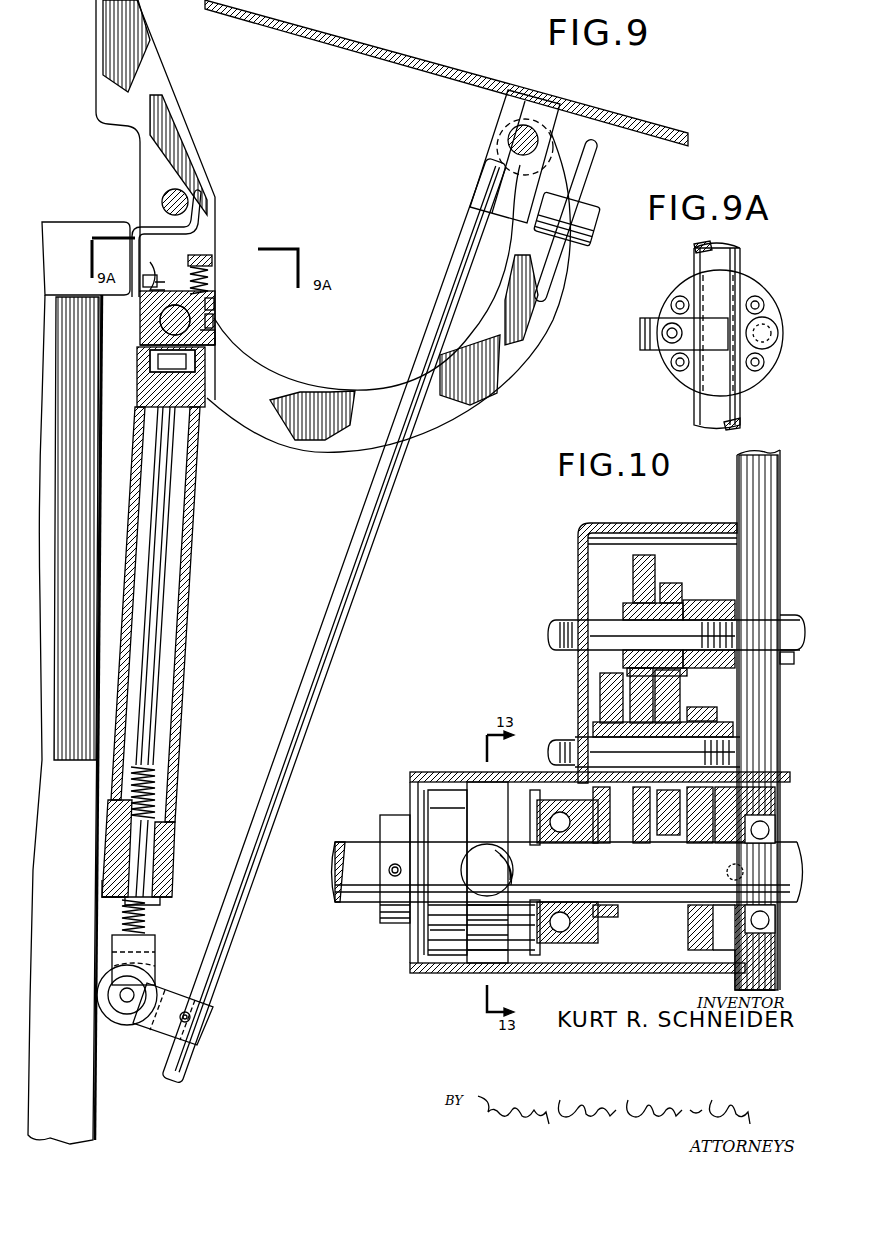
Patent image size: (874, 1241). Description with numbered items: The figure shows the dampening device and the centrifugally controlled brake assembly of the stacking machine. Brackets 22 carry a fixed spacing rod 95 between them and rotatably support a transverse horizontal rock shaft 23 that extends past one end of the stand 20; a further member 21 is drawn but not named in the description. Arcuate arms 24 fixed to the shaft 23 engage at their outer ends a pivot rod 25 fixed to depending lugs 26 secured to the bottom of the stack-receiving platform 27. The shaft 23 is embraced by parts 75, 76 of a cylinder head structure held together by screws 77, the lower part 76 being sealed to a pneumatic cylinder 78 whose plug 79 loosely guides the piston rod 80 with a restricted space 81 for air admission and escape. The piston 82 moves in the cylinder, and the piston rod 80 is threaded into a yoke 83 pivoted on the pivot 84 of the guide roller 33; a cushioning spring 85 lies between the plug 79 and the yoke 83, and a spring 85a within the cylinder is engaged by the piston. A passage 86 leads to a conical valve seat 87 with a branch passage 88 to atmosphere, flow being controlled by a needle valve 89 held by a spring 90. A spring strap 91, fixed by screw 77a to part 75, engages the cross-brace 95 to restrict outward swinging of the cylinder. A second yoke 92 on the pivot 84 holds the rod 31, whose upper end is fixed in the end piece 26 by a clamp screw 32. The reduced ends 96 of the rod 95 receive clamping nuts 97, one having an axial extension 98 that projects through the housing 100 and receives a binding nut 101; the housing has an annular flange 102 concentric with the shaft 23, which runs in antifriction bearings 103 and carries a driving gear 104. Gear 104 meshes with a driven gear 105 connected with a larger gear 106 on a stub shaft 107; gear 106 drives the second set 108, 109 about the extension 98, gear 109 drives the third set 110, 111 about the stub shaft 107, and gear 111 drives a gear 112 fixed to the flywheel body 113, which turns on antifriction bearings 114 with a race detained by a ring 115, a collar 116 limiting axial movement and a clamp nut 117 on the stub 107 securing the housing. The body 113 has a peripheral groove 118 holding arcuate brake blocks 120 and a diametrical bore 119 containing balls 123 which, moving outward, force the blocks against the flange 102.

In FIG. 9, the stand 20 is at (62, 292).
In FIG. 9, the column 21 is at (104, 1124).
In FIG. 9, the brackets 22 is at (178, 136).
In FIG. 10, the brackets 22 is at (750, 470).
In FIG. 9, the rock shaft 23 is at (184, 243).
In FIG. 9A, the rock shaft 23 is at (735, 256).
In FIG. 10, the rock shaft 23 is at (345, 878).
In FIG. 9, the arms 24 is at (327, 440).
In FIG. 9, the pivot rod 25 is at (510, 136).
In FIG. 9, the depending lugs 26 is at (468, 198).
In FIG. 9, the stack-receiving platform 27 is at (318, 36).
In FIG. 9, the extension rod 31 is at (318, 680).
In FIG. 9, the clamp screw 32 is at (582, 228).
In FIG. 9, the guide roller 33 is at (125, 1030).
In FIG. 9, the upper part of cylinder head structure 75 is at (150, 300).
In FIG. 9A, the upper part of cylinder head structure 75 is at (772, 318).
In FIG. 9, the lower part of cylinder head structure 76 is at (152, 335).
In FIG. 9, the screws 77 is at (154, 269).
In FIG. 9A, the screws 77 is at (678, 298).
In FIG. 9A, the screw 77a is at (668, 326).
In FIG. 9, the pneumatic cylinder 78 is at (195, 555).
In FIG. 9, the plug 79 is at (160, 882).
In FIG. 9, the piston rod 80 is at (150, 715).
In FIG. 9, the restricted space 81 is at (150, 838).
In FIG. 9, the piston 82 is at (188, 412).
In FIG. 9, the yoke 83 is at (150, 948).
In FIG. 9, the pivot 84 is at (132, 993).
In FIG. 9, the cushioning spring 85 is at (148, 922).
In FIG. 9, the spring 85a is at (152, 792).
In FIG. 9, the passage 86 is at (200, 352).
In FIG. 9, the conical valve seat 87 is at (205, 340).
In FIG. 9, the branch passage 88 is at (210, 326).
In FIG. 9, the needle valve 89 is at (212, 304).
In FIG. 9A, the needle valve 89 is at (765, 340).
In FIG. 9, the spring 90 is at (205, 275).
In FIG. 9, the spring strap 91 is at (197, 224).
In FIG. 9A, the spring strap 91 is at (655, 352).
In FIG. 9, the second yoke 92 is at (210, 1017).
In FIG. 9, the spacing rod 95 is at (190, 205).
In FIG. 10, the spacing rod 95 is at (787, 665).
In FIG. 10, the reduced ends 96 is at (760, 622).
In FIG. 10, the clamping nuts 97 is at (695, 625).
In FIG. 10, the reduced axial extension 98 is at (604, 630).
In FIG. 10, the housing 100 is at (598, 525).
In FIG. 10, the binding nut 101 is at (568, 620).
In FIG. 10, the annular flange 102 is at (420, 772).
In FIG. 10, the antifriction bearings 103 is at (770, 830).
In FIG. 10, the driving gear 104 is at (692, 925).
In FIG. 10, the driven gear 105 is at (700, 712).
In FIG. 10, the larger gear 106 is at (660, 795).
In FIG. 10, the stub shaft 107 is at (657, 744).
In FIG. 10, the smaller gear of second set 108 is at (675, 585).
In FIG. 10, the larger gear of second set 109 is at (648, 557).
In FIG. 10, the smaller gear of third set 110 is at (640, 800).
In FIG. 10, the larger gear of third set 111 is at (612, 822).
In FIG. 10, the gear 112 is at (625, 720).
In FIG. 10, the rotor or flywheel body 113 is at (447, 945).
In FIG. 10, the antifriction bearings 114 is at (556, 945).
In FIG. 10, the ring 115 is at (580, 945).
In FIG. 10, the collar 116 is at (392, 900).
In FIG. 10, the clamp nut 117 is at (548, 752).
In FIG. 10, the peripheral groove 118 is at (462, 815).
In FIG. 10, the diametrical bore 119 is at (460, 875).
In FIG. 10, the brake blocks 120 is at (485, 792).
In FIG. 10, the balls 123 is at (515, 870).